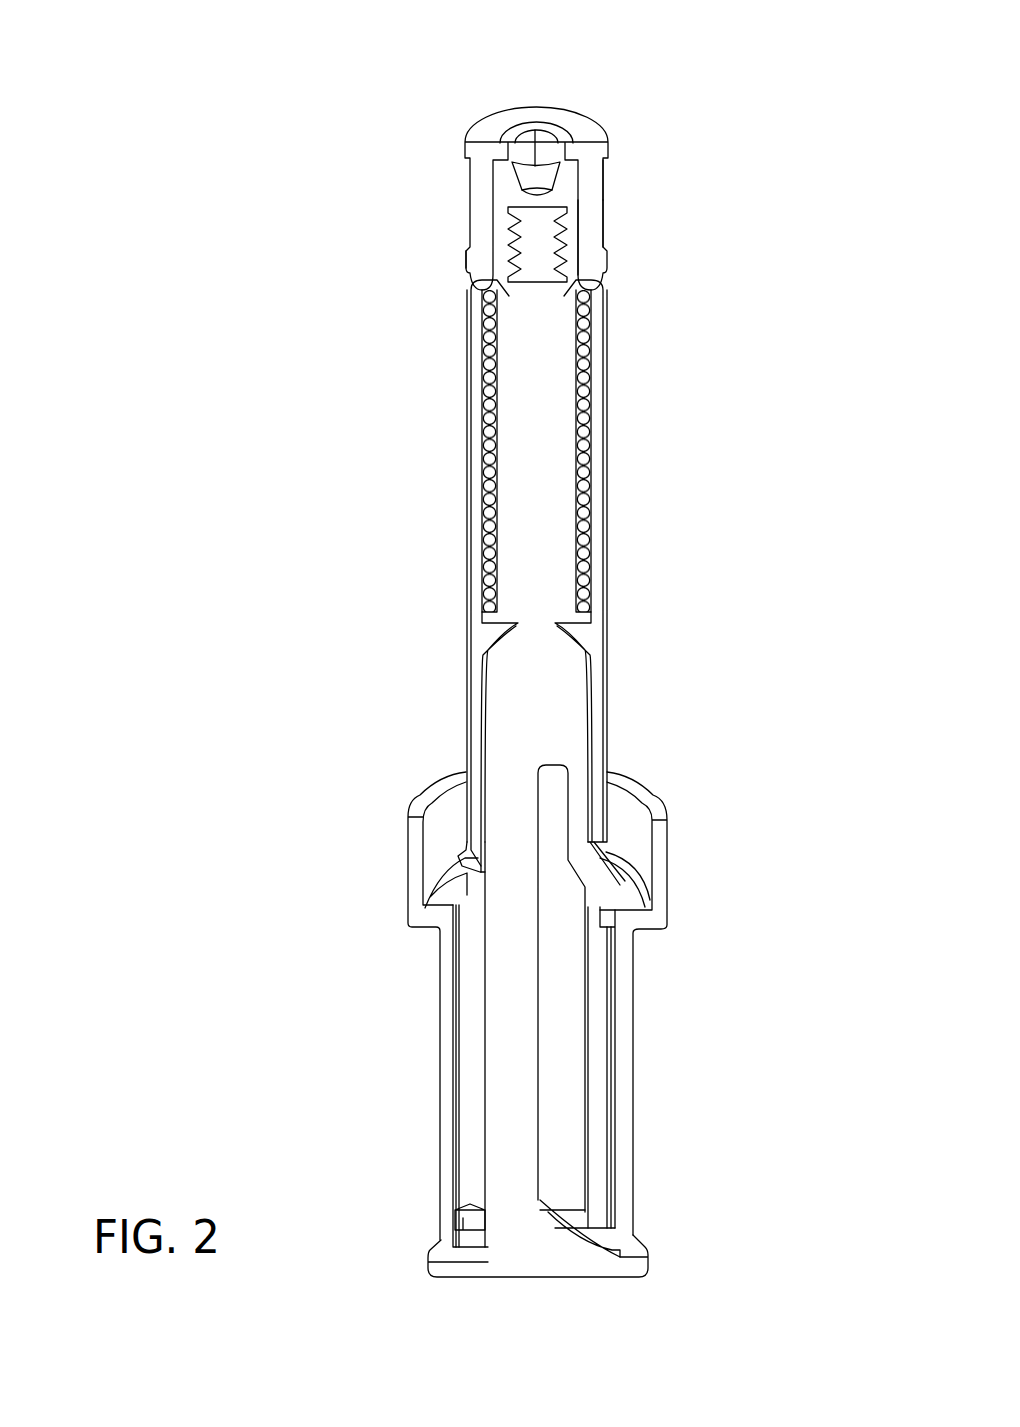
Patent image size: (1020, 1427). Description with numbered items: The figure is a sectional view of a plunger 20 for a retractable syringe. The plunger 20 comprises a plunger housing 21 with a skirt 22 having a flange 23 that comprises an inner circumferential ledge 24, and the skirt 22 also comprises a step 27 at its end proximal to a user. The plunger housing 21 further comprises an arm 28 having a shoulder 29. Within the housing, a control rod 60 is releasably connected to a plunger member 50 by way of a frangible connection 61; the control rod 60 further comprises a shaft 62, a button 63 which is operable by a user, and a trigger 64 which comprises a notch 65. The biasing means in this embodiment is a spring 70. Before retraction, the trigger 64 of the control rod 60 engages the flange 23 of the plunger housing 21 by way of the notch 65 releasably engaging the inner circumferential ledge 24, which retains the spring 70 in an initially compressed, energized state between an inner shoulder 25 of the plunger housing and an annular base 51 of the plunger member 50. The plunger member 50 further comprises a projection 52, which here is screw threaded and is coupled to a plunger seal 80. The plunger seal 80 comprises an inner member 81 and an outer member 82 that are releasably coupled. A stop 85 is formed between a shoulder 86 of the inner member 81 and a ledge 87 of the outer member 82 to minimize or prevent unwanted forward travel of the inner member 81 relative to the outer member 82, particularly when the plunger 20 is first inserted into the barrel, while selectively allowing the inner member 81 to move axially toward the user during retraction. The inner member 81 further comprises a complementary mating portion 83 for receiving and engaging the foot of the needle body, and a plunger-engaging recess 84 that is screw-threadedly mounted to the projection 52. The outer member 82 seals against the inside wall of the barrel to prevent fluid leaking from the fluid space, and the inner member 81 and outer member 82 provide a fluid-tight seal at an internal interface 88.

The plunger 20 is at (262, 654).
The plunger housing 21 is at (466, 489).
The skirt 22 is at (391, 912).
The flange 23 is at (412, 843).
The inner circumferential ledge 24 is at (648, 917).
The inner shoulder 25 is at (467, 257).
The step 27 is at (460, 1195).
The arm 28 is at (462, 848).
The shoulder 29 is at (460, 867).
The plunger member 50 is at (533, 345).
The annular base 51 is at (480, 628).
The projection 52 is at (538, 237).
The control rod 60 is at (515, 1011).
The frangible connection 61 is at (545, 618).
The shaft 62 is at (515, 1062).
The button 63 is at (532, 1262).
The trigger 64 is at (600, 875).
The notch 65 is at (613, 907).
The spring 70 is at (487, 385).
The plunger seal 80 is at (587, 93).
The inner member 81 is at (502, 178).
The outer member 82 is at (588, 205).
The complementary mating portion 83 is at (536, 128).
The plunger-engaging recess 84 is at (512, 208).
The stop 85 is at (615, 157).
The shoulder 86 is at (580, 173).
The ledge 87 is at (575, 153).
The internal interface 88 is at (580, 232).